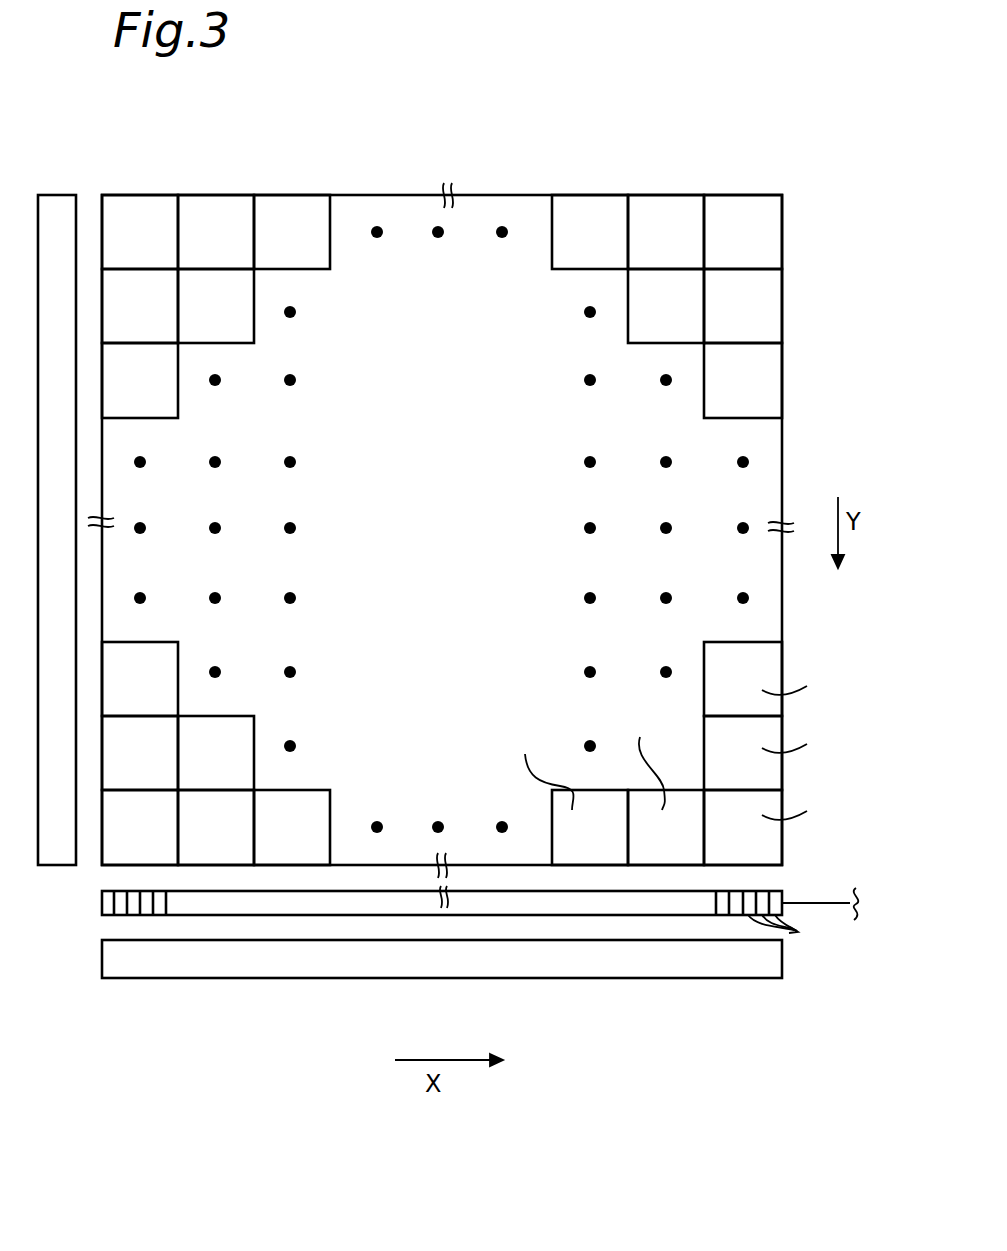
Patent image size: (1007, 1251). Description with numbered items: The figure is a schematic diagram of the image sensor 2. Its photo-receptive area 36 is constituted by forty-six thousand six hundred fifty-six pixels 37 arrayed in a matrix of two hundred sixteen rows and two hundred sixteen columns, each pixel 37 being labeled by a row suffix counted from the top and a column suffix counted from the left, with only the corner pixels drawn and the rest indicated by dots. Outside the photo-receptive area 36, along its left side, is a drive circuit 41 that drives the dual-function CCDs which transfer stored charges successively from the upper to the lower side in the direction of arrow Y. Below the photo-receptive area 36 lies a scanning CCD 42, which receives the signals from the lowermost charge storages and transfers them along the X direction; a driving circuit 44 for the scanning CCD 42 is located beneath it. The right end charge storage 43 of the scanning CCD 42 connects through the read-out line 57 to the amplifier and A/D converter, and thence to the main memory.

The pixel array / image pickup unit 2 is at (481, 488).
The photo-receptive area 36 is at (788, 232).
The pixel 37 is at (647, 195).
The drive circuit 41 is at (65, 195).
The scanning CCD 42 is at (102, 903).
The right end charge storage 43 is at (782, 940).
The driving circuit 44 is at (684, 978).
The read-out line 57 is at (820, 900).